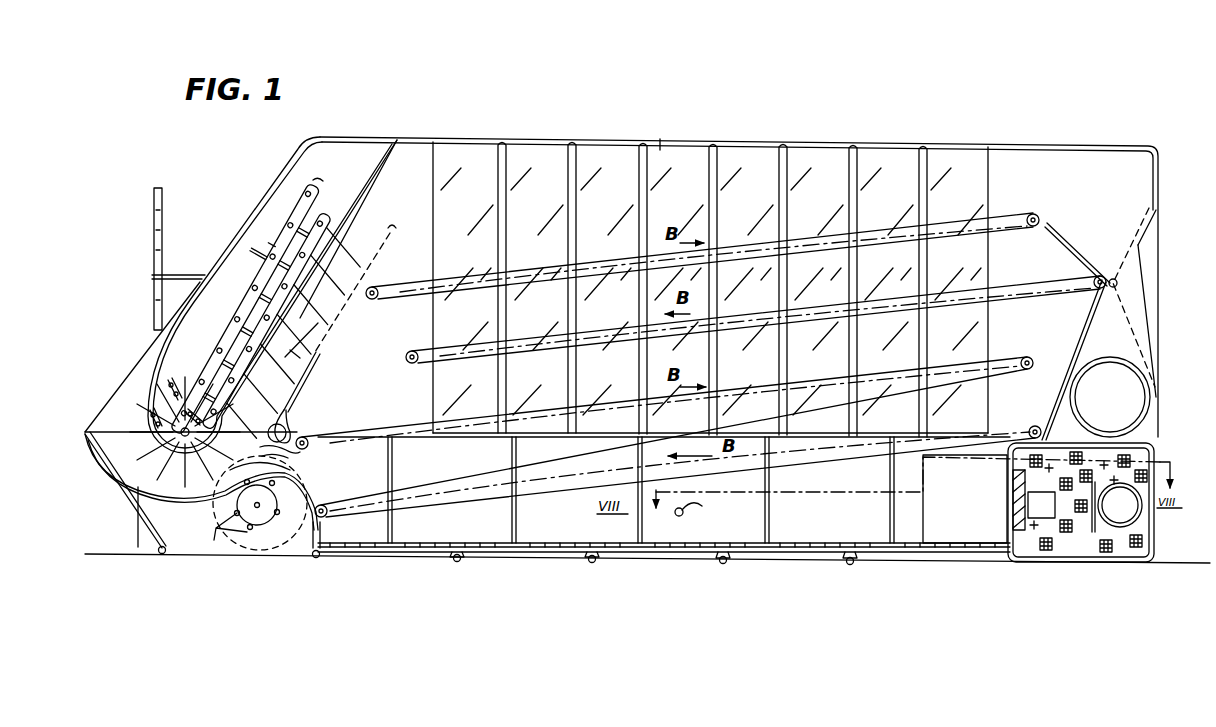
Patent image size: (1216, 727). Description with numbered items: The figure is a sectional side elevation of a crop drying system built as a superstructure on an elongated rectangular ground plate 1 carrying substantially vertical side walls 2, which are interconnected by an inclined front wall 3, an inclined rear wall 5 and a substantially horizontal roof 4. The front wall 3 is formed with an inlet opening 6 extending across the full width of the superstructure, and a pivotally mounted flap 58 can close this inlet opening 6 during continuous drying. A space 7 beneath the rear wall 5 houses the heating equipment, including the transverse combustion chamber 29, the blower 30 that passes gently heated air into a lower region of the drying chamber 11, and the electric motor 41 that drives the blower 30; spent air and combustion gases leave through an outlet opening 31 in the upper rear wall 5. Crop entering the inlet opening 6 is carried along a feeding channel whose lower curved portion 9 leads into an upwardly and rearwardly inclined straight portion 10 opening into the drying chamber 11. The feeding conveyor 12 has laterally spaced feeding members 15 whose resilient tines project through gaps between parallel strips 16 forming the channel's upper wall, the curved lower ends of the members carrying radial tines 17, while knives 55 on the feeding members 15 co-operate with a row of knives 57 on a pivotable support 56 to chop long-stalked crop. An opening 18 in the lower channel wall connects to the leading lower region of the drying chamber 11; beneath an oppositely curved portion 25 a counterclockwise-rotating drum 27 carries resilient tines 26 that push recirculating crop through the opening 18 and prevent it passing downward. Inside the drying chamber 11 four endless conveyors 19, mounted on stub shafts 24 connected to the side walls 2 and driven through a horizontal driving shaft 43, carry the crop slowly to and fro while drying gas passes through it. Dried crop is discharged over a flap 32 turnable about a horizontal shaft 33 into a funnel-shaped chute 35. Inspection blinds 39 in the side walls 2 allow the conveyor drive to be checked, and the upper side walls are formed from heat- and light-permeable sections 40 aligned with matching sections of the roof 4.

The ground plate 1 is at (645, 555).
The side walls 2 is at (1040, 150).
The front wall 3 is at (268, 198).
The roof 4 is at (430, 141).
The rear wall 5 is at (1096, 325).
The inlet opening 6 is at (130, 384).
The space 7 is at (1138, 470).
The lower curved portion 9 is at (190, 500).
The straight portion 10 is at (333, 312).
The drying chamber 11 is at (548, 324).
The feeding conveyor 12 is at (240, 284).
The feeding members 15 is at (322, 210).
The strips 16 is at (374, 182).
The resilient tines 17 is at (190, 464).
The opening 18 is at (297, 454).
The endless conveyors 19 is at (596, 270).
The stub shafts 24 is at (374, 286).
The curved portion 25 is at (305, 470).
The resilient tines 26 is at (267, 524).
The drum 27 is at (226, 530).
The combustion chamber 29 is at (1118, 528).
The blower 30 is at (1010, 500).
The outlet opening 31 is at (1150, 186).
The flap 32 is at (1070, 244).
The horizontal shaft 33 is at (1116, 284).
The funnel-shaped chute 35 is at (1155, 346).
The inspection blinds 39 is at (947, 546).
The sections 40 is at (665, 147).
The electric motor 41 is at (1040, 490).
The driving shaft 43 is at (704, 514).
The knife 55 is at (218, 334).
The support 56 is at (318, 370).
The knives 57 is at (290, 350).
The flap 58 is at (165, 244).